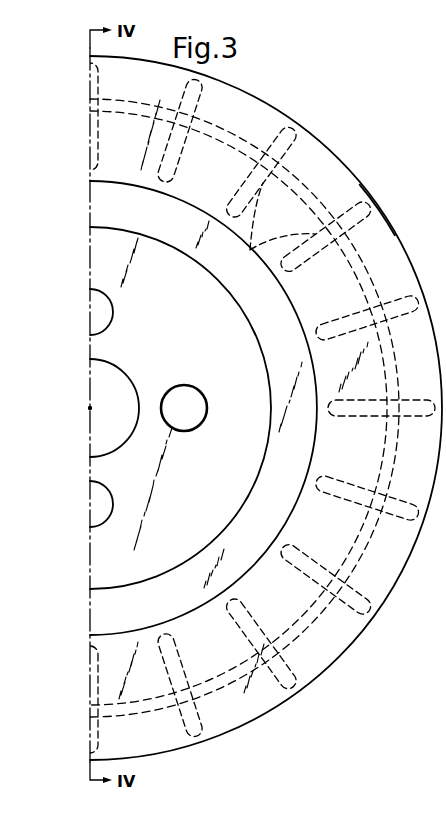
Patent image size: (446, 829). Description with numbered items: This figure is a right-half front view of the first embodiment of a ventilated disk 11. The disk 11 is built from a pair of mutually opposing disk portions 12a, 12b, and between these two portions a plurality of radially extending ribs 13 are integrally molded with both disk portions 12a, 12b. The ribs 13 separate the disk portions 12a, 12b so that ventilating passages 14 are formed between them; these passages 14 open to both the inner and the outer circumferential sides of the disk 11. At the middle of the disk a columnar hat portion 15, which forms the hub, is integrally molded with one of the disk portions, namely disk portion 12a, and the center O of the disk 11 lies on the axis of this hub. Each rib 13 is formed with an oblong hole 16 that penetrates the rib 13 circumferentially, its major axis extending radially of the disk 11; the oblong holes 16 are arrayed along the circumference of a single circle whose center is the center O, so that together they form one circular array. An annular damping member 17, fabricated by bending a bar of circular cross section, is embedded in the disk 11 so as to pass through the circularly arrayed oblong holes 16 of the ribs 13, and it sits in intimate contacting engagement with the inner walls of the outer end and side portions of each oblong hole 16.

The ventilated disk 11 is at (266, 408).
The disk portion 12a is at (266, 408).
The disk portion 12b is at (259, 99).
The radially extending ribs 13 is at (294, 133).
The ventilating passages 14 is at (350, 179).
The columnar hat portion 15 is at (97, 257).
The oblong hole 16 is at (250, 250).
The annular damping member 17 is at (359, 263).
The center of the disk O is at (90, 408).